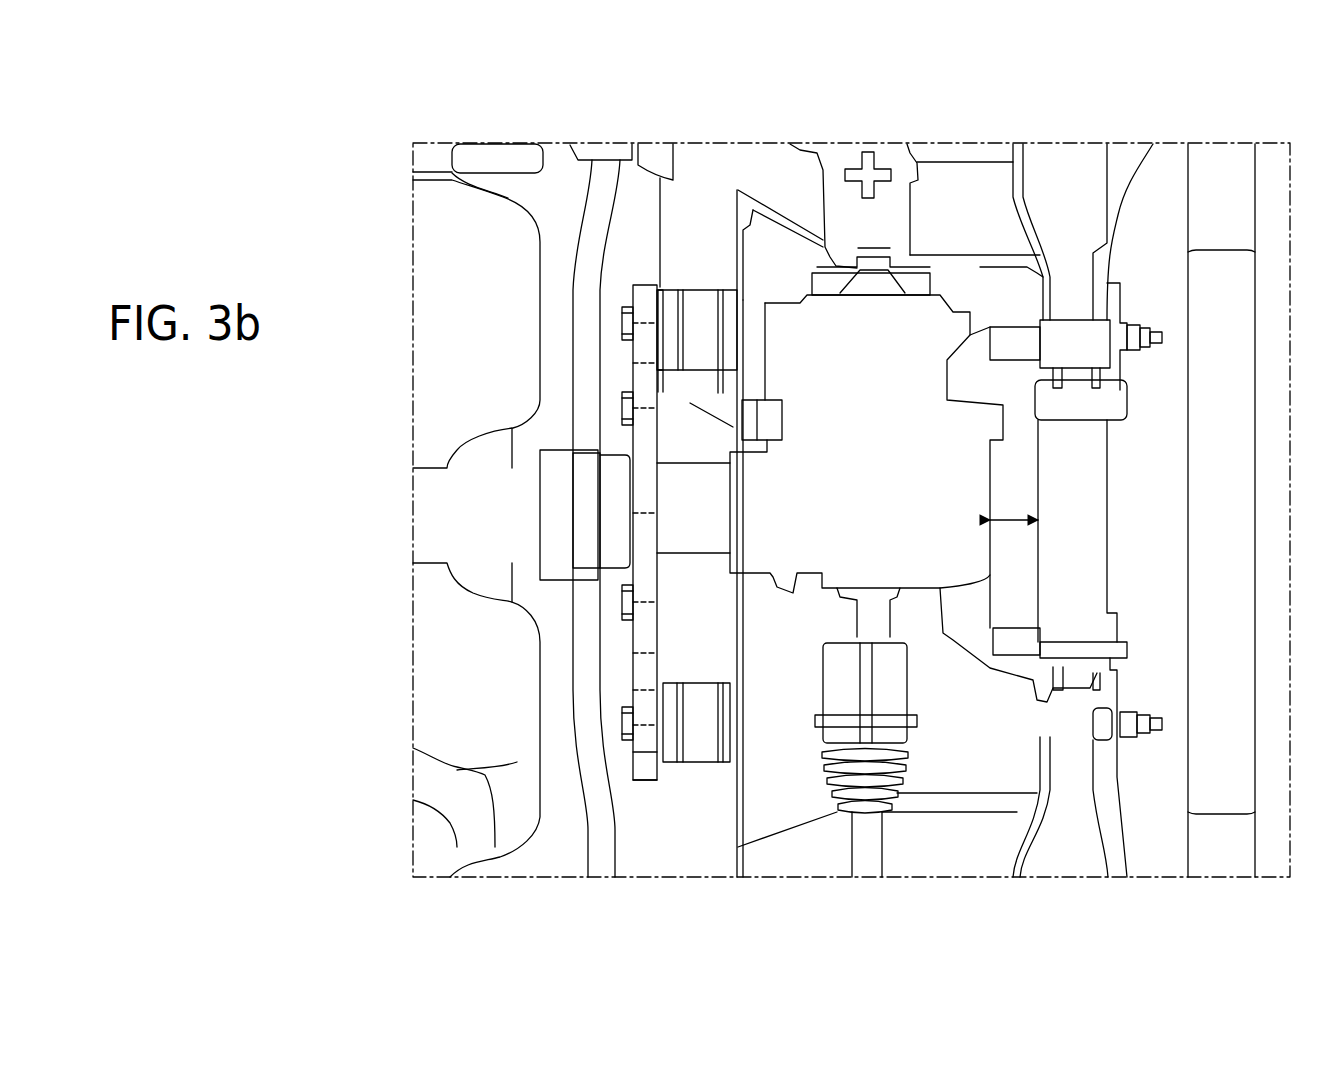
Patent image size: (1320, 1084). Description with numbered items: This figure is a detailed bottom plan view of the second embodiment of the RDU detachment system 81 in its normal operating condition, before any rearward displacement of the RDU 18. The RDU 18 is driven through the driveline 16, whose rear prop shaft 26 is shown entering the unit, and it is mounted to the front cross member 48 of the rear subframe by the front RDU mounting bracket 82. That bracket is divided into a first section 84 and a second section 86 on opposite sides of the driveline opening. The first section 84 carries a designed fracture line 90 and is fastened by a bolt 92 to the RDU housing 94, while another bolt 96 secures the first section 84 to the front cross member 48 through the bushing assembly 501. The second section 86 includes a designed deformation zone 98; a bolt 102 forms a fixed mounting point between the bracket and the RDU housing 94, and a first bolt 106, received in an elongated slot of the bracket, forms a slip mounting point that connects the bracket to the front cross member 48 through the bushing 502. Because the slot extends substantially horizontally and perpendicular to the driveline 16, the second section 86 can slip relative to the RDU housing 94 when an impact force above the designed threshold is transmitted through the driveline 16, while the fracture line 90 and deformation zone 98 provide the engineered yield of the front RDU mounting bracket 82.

The driveline 16 is at (370, 560).
The RDU 18 is at (790, 286).
The rear prop shaft 26 is at (457, 513).
The front cross member 48 is at (697, 197).
The bushing assembly 501 is at (700, 312).
The bushing 502 is at (702, 745).
The RDU detachment system 81 is at (568, 104).
The front RDU mounting bracket 82 is at (633, 748).
The first section 84 is at (647, 302).
The second section 86 is at (640, 623).
The designed fracture line 90 is at (647, 364).
The bolt 92 is at (630, 410).
The RDU housing 94 is at (897, 347).
The bolt 96 is at (622, 323).
The designed deformation zone 98 is at (640, 670).
The bolt 102 is at (640, 607).
The first bolt 106 is at (630, 720).